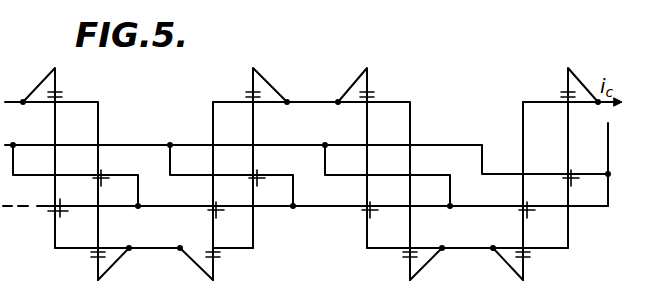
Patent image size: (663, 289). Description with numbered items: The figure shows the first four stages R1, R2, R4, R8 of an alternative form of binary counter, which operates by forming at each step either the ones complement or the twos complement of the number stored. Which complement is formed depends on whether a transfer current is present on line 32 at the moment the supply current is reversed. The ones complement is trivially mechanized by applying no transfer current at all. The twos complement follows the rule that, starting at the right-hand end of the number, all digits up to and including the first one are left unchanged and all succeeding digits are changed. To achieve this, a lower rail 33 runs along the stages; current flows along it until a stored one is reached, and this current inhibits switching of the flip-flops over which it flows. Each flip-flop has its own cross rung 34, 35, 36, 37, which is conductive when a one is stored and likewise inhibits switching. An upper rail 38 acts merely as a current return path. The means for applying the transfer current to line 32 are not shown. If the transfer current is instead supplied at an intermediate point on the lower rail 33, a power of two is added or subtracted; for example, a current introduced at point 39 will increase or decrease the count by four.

The line 32 is at (608, 150).
The lower rail 33 is at (145, 207).
The cross rung 34 is at (485, 153).
The cross rung 35 is at (452, 190).
The cross rung 36 is at (294, 190).
The cross rung 37 is at (140, 190).
The upper rail 38 is at (133, 145).
The point 39 is at (293, 208).
The first stage R1 is at (556, 178).
The second stage R2 is at (414, 178).
The third stage R4 is at (295, 178).
The fourth stage R8 is at (94, 178).